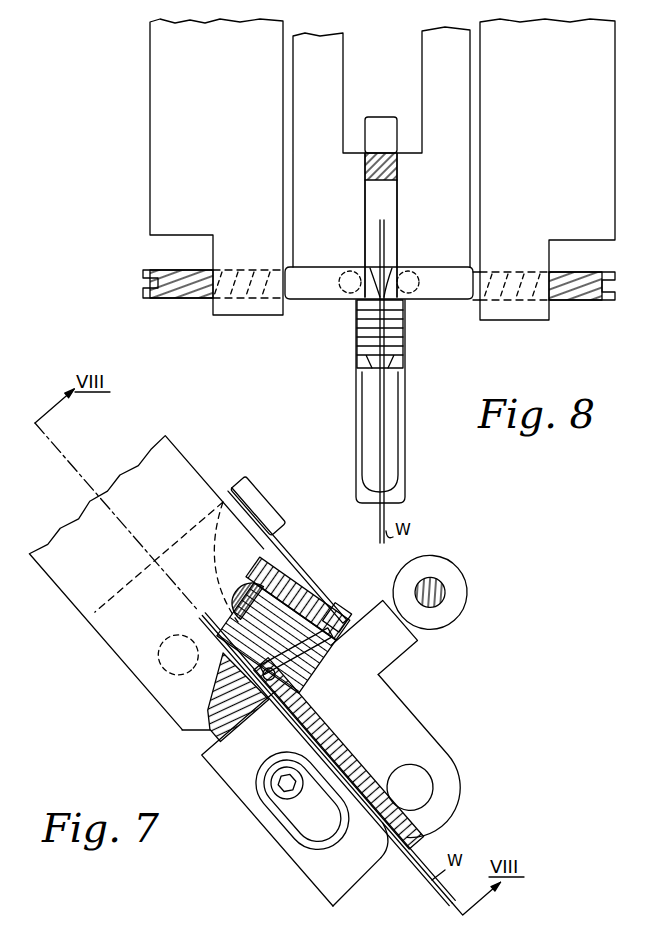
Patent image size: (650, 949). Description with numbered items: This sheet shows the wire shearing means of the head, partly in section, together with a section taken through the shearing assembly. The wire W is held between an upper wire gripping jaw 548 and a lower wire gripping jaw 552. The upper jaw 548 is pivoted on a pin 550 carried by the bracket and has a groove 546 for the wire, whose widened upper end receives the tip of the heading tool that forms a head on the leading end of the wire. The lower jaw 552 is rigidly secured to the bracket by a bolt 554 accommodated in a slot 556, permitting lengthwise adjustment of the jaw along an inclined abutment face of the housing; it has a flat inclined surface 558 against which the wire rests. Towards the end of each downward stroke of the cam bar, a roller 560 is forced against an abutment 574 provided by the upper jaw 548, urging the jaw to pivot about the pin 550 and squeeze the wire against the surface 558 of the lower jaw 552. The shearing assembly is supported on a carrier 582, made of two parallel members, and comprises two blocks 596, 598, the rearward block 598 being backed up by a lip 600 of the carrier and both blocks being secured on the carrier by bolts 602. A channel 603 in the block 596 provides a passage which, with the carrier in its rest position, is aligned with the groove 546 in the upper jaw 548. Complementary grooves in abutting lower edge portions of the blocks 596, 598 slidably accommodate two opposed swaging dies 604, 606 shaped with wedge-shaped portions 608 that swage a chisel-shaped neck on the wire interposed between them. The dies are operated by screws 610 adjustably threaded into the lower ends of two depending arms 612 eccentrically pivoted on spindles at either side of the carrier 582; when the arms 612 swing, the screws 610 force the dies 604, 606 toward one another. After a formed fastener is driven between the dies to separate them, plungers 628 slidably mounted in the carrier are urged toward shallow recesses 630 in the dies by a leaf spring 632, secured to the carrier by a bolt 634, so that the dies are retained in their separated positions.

In FIG. 7, the groove 546 is at (383, 777).
In FIG. 8, the upper wire gripping jaw 548 is at (404, 393).
In FIG. 7, the upper wire gripping jaw 548 is at (395, 703).
In FIG. 7, the pin 550 is at (428, 786).
In FIG. 7, the lower wire gripping jaw 552 is at (232, 782).
In FIG. 7, the bolt 554 is at (277, 797).
In FIG. 7, the slot 556 is at (318, 835).
In FIG. 7, the flat inclined surface 558 is at (360, 807).
In FIG. 7, the roller 560 is at (459, 606).
In FIG. 7, the abutment 574 is at (378, 613).
In FIG. 7, the carrier 582 is at (76, 609).
In FIG. 8, the block 596 is at (385, 116).
In FIG. 7, the block 596 is at (215, 730).
In FIG. 8, the block 598 is at (396, 205).
In FIG. 7, the block 598 is at (279, 625).
In FIG. 7, the lip 600 is at (282, 562).
In FIG. 7, the bolts 602 is at (140, 712).
In FIG. 8, the channel 603 is at (378, 172).
In FIG. 7, the channel 603 is at (232, 640).
In FIG. 8, the swaging die 604 is at (305, 300).
In FIG. 7, the swaging die 604 is at (268, 707).
In FIG. 8, the swaging die 606 is at (462, 300).
In FIG. 8, the wedge-shaped portions 608 is at (370, 267).
In FIG. 8, the screws 610 is at (195, 299).
In FIG. 8, the depending arms 612 is at (222, 140).
In FIG. 7, the plungers 628 is at (333, 641).
In FIG. 8, the shallow recesses 630 is at (338, 300).
In FIG. 7, the shallow recesses 630 is at (285, 676).
In FIG. 7, the leaf spring 632 is at (328, 604).
In FIG. 7, the bolt 634 is at (243, 492).